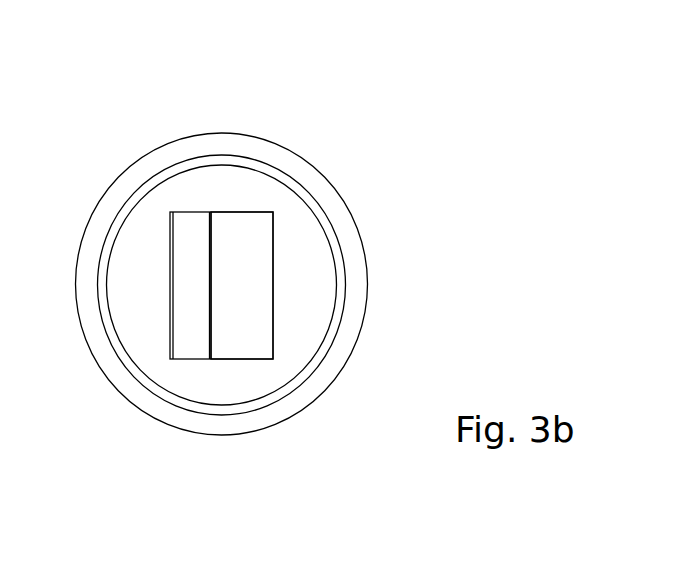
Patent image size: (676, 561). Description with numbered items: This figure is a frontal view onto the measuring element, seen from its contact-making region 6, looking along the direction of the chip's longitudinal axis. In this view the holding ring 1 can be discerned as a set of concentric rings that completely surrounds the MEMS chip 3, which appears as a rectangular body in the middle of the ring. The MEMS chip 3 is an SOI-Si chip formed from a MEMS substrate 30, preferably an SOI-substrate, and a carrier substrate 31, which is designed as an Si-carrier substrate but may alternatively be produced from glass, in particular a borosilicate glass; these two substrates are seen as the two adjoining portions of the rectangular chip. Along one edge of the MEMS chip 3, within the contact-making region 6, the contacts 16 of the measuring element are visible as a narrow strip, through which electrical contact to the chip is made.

The holding ring 1 is at (120, 192).
The contact-making region 6 is at (303, 125).
The MEMS chip 3 is at (195, 368).
The contacts 16 is at (170, 300).
The MEMS substrate 30 is at (193, 322).
The carrier substrate 31 is at (240, 323).